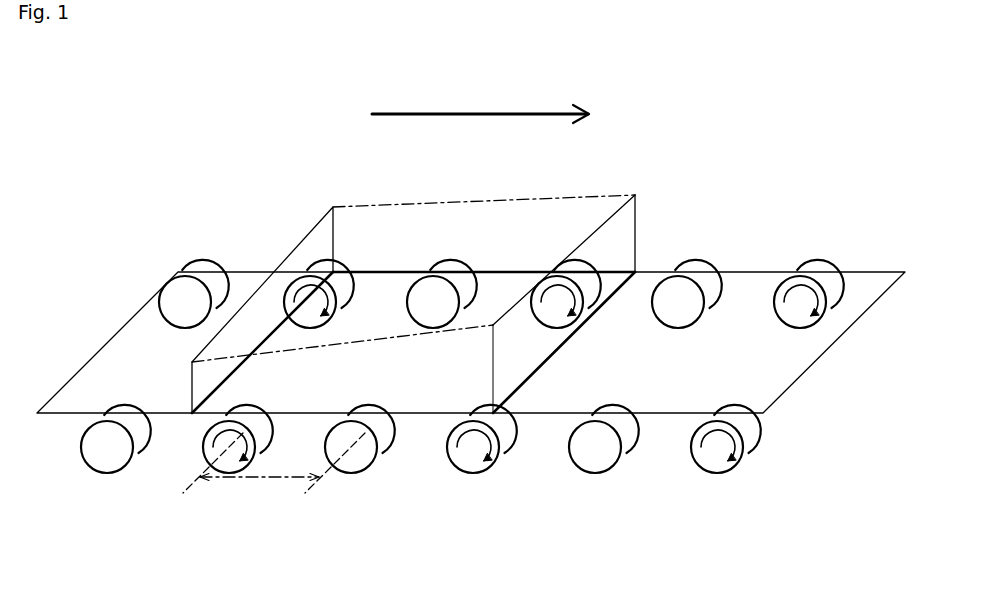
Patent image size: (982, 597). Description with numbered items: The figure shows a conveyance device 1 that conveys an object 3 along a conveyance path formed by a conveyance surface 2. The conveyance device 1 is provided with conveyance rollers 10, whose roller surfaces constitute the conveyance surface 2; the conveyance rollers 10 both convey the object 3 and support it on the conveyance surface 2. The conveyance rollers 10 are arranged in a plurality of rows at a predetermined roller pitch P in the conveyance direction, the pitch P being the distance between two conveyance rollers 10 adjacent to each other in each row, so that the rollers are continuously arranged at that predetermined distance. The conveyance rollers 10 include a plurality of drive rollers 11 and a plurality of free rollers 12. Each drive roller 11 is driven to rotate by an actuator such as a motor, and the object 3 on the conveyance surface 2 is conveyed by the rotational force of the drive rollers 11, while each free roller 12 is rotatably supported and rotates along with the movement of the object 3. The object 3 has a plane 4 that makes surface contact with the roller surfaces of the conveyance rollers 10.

The conveyance device 1 is at (121, 161).
The conveyance surface 2 is at (146, 338).
The object 3 is at (637, 203).
The plane 4 is at (529, 357).
The conveyance rollers 10 is at (792, 450).
The drive rollers 11 is at (203, 448).
The free rollers 12 is at (357, 469).
The roller pitch P is at (274, 473).